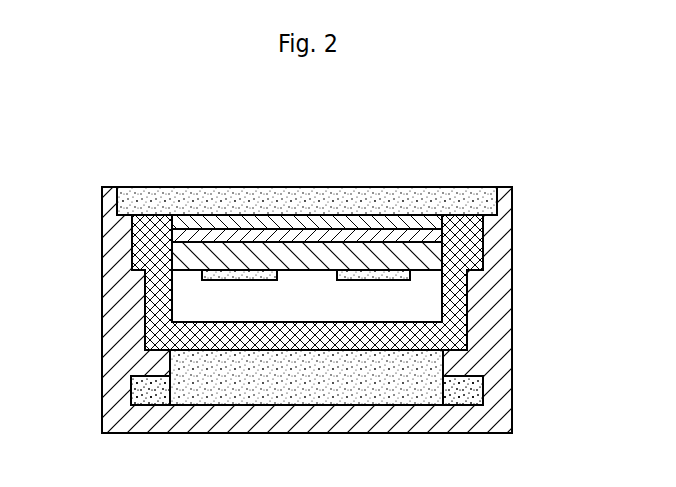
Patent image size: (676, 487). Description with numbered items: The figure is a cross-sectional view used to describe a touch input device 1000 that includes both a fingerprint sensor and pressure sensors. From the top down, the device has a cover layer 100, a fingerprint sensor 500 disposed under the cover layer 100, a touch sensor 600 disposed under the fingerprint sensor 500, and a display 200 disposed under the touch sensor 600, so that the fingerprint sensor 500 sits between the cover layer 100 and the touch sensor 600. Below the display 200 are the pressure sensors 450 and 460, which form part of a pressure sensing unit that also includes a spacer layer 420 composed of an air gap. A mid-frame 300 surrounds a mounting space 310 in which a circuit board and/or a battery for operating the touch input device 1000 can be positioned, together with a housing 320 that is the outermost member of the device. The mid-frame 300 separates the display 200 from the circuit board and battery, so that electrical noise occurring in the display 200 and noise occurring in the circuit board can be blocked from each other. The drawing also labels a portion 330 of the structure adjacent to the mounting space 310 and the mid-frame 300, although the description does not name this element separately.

The touch input device 1000 is at (491, 153).
The cover layer 100 is at (479, 201).
The display 200 is at (430, 255).
The mid-frame 300 is at (408, 345).
The mounting space 310 is at (467, 394).
The housing 320 is at (130, 394).
The sidewall 330 is at (453, 295).
The spacer layer 420 is at (183, 302).
The pressure sensor 450 is at (243, 276).
The pressure sensor 460 is at (375, 278).
The fingerprint sensor 500 is at (158, 219).
The touch sensor 600 is at (167, 230).